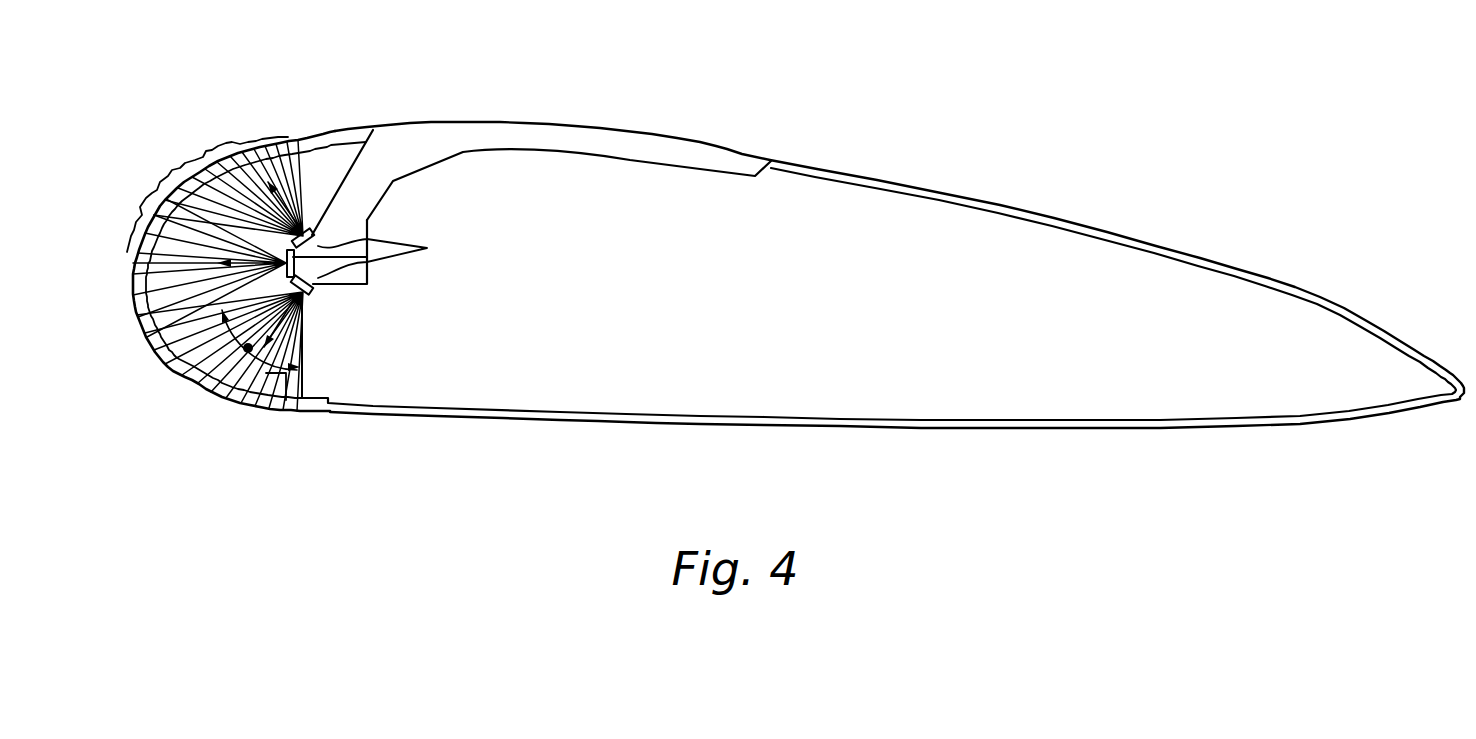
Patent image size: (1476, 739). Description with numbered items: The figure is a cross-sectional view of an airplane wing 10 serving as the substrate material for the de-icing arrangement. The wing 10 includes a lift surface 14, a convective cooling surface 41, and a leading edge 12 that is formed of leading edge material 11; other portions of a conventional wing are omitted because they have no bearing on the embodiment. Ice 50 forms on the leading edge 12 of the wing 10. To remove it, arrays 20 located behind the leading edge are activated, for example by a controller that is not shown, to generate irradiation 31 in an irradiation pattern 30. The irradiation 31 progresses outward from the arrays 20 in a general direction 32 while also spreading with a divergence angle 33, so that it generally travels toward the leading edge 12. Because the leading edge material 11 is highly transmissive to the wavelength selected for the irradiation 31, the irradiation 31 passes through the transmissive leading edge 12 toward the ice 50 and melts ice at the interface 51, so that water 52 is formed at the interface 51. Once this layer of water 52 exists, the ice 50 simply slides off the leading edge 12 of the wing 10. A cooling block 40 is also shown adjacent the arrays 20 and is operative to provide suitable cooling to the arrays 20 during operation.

The airplane wing 10 is at (1047, 214).
The leading edge material 11 is at (153, 337).
The leading edge 12 is at (188, 385).
The lift surface 14 is at (985, 428).
The arrays 20 is at (427, 248).
The irradiation pattern 30 is at (313, 357).
The irradiation 31 is at (278, 376).
The general direction 32 is at (303, 190).
The divergence angle 33 is at (248, 352).
The cooling block 40 is at (347, 285).
The convective cooling surface 41 is at (411, 124).
The ice 50 is at (203, 153).
The interface 51 is at (232, 152).
The water 52 is at (158, 180).